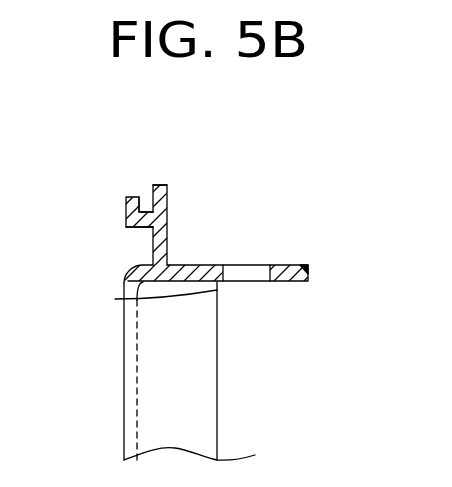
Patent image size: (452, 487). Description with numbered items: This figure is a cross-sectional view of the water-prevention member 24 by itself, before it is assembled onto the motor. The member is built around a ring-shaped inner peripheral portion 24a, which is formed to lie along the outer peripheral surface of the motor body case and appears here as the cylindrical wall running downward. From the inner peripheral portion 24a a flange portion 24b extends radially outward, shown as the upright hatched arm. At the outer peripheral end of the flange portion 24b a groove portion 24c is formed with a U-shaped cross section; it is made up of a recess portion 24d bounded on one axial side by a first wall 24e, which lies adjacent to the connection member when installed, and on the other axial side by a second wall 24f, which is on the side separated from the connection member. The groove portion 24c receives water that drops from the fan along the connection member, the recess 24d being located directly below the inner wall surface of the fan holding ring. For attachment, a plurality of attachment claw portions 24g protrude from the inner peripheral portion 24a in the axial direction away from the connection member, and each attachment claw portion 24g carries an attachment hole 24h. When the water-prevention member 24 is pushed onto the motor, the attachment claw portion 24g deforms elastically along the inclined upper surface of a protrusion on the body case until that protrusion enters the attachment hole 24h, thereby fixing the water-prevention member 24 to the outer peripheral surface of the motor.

The water-prevention member 24 is at (226, 243).
The inner peripheral portion 24a is at (183, 402).
The flange portion 24b is at (157, 242).
The groove portion 24c is at (140, 238).
The recess portion 24d is at (143, 203).
The first wall 24e is at (127, 208).
The second wall 24f is at (165, 183).
The attachment claw portion 24g is at (297, 270).
The attachment hole 24h is at (270, 283).